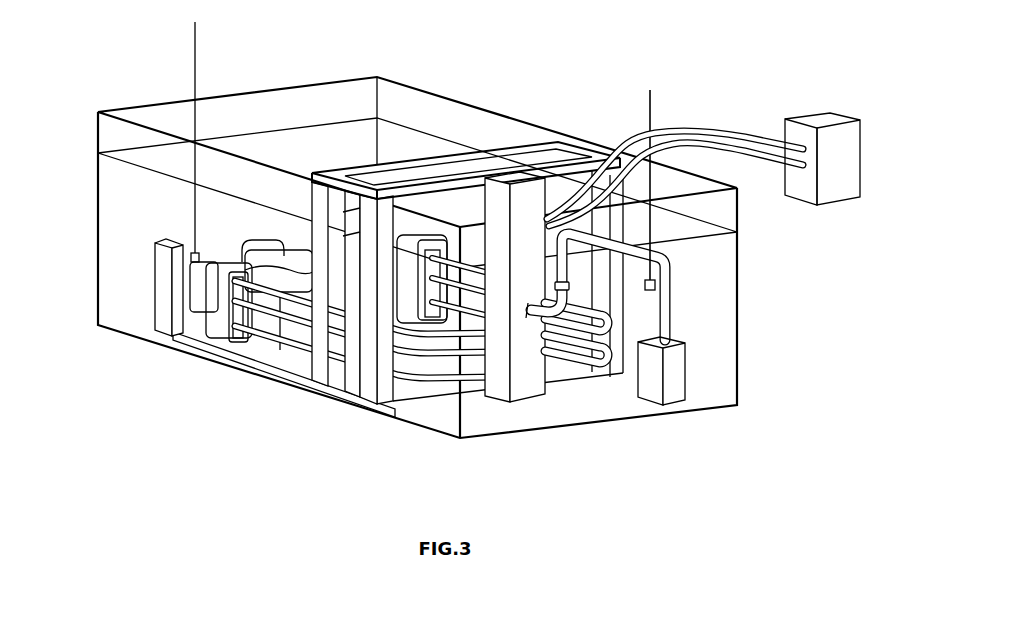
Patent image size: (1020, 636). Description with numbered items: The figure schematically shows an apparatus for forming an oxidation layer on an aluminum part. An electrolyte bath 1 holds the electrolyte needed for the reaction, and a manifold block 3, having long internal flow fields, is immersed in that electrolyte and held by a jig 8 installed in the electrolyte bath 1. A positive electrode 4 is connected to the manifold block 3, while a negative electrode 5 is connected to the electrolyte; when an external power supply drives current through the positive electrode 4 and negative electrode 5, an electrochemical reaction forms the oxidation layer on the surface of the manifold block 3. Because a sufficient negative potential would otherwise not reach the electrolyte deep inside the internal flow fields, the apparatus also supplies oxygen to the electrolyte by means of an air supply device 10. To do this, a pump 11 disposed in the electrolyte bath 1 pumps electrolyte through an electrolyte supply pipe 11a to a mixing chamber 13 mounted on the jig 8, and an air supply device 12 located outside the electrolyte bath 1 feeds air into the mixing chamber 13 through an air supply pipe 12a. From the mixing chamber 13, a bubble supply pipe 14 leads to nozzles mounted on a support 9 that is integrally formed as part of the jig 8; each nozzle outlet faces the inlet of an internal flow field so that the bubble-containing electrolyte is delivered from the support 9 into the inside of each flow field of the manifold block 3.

The electrolyte bath 1 is at (98, 168).
The manifold block 3 is at (288, 258).
The positive electrode 4 is at (190, 247).
The negative electrode 5 is at (670, 286).
The jig 8 is at (160, 327).
The support 9 is at (233, 347).
The air supply device 10 is at (570, 380).
The pump 11 is at (683, 369).
The electrolyte supply pipe 11a is at (666, 328).
The air supply device 12 is at (823, 118).
The air supply pipe 12a is at (740, 135).
The mixing chamber 13 is at (527, 378).
The bubble supply pipe 14 is at (436, 340).